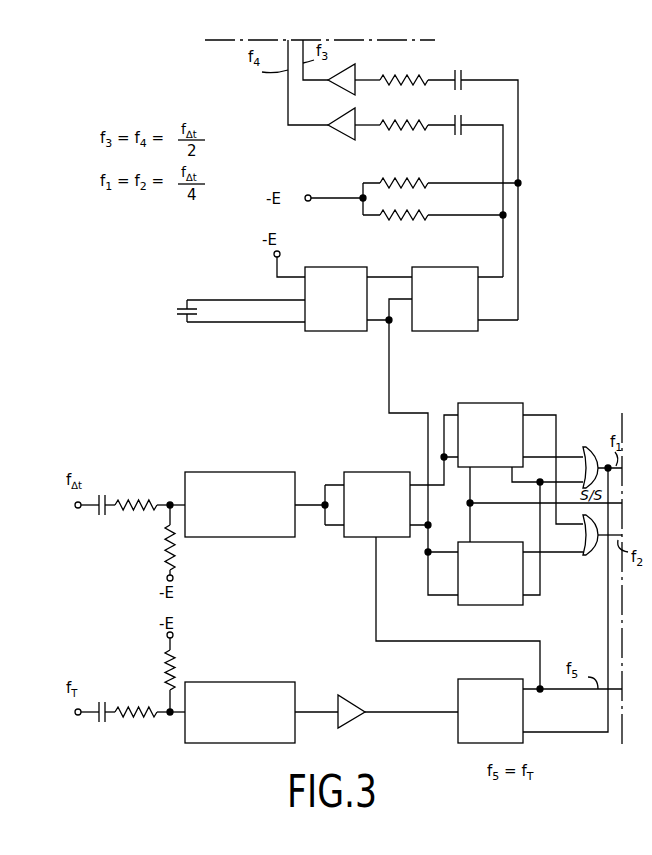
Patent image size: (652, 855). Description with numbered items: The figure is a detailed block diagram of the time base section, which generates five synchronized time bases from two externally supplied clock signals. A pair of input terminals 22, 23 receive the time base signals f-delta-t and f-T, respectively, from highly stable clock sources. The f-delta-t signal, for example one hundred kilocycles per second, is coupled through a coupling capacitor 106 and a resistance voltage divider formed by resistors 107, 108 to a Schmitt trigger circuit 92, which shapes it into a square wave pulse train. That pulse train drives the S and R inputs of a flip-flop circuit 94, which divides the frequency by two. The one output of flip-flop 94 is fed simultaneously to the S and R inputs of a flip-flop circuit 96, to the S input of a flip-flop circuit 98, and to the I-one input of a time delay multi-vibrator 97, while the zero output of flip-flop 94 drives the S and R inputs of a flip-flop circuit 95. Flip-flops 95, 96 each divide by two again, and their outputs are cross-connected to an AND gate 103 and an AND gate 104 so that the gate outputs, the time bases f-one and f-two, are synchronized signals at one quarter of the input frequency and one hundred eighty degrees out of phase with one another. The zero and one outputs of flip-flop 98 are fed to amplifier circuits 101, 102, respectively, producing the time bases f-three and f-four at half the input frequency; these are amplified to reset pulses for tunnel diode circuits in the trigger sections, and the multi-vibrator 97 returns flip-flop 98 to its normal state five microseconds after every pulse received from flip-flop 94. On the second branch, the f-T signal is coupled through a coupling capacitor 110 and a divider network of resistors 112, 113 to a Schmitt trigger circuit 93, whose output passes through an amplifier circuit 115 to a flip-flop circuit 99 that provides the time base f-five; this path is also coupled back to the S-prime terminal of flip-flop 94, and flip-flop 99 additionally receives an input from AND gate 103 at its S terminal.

The input terminal 22 is at (78, 510).
The input terminal 23 is at (80, 716).
The Schmitt trigger circuit 92 is at (279, 472).
The Schmitt trigger circuit 93 is at (277, 682).
The flip-flop circuit 94 is at (392, 472).
The flip-flop circuit 95 is at (500, 403).
The flip-flop circuit 96 is at (505, 605).
The time delay multi-vibrator 97 is at (324, 331).
The flip-flop circuit 98 is at (460, 267).
The flip-flop circuit 99 is at (512, 679).
The amplifier circuit 101 is at (346, 91).
The amplifier circuit 102 is at (346, 136).
The AND gate 103 is at (594, 556).
The AND gate 104 is at (592, 447).
The coupling capacitor 106 is at (104, 497).
The resistor 107 is at (150, 512).
The resistor 108 is at (173, 550).
The coupling capacitor 110 is at (103, 704).
The resistor 112 is at (132, 719).
The resistor 113 is at (173, 673).
The amplifier circuit 115 is at (343, 729).